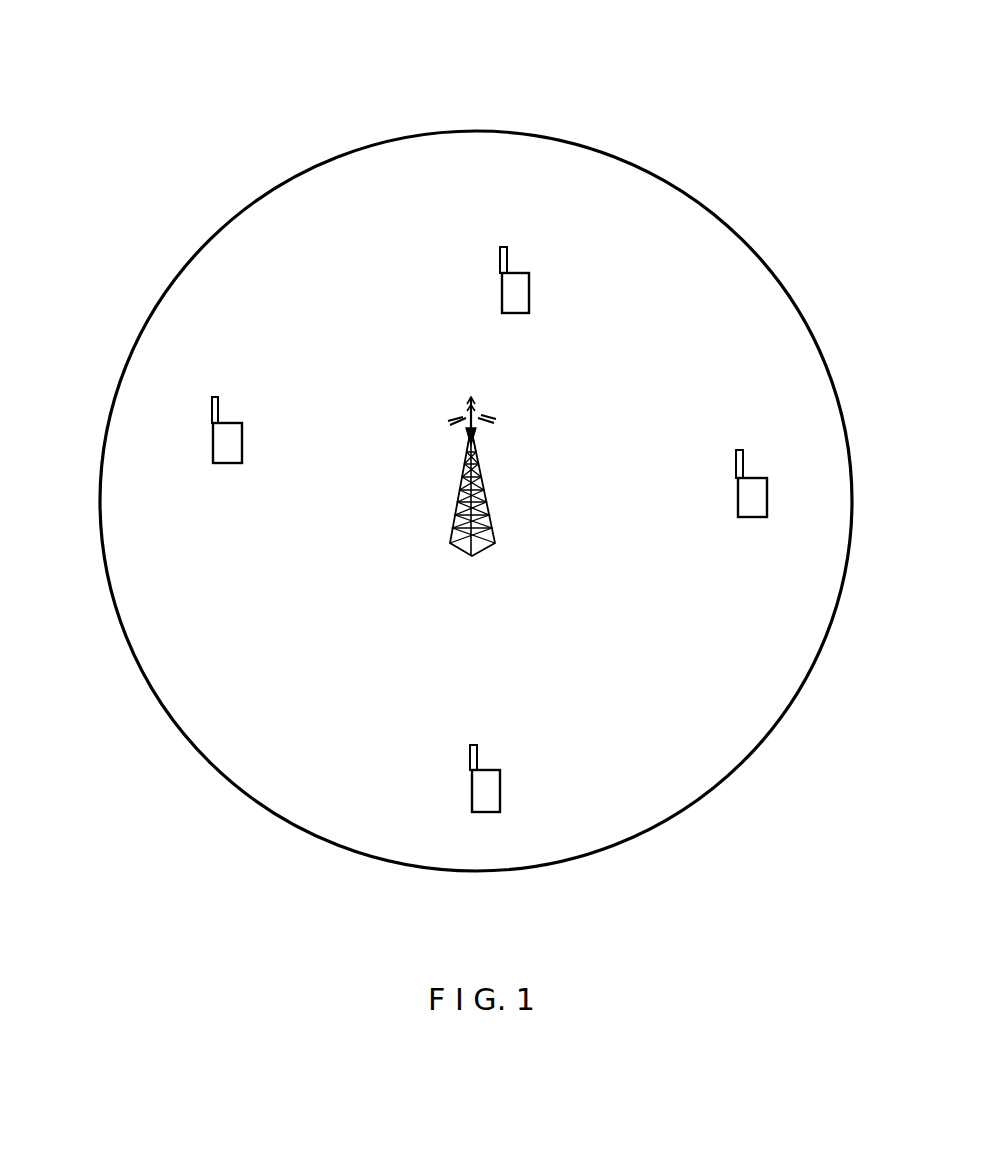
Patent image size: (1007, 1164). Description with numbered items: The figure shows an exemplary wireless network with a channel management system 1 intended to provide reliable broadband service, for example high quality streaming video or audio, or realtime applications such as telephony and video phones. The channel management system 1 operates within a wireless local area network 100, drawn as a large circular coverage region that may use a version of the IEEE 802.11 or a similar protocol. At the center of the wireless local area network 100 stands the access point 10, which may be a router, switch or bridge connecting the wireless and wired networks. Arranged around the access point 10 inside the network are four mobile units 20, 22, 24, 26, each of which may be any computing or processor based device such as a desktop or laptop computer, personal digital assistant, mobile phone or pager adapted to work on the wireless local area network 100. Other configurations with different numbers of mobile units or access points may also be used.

The channel management system 1 is at (443, 46).
The wireless local area network 100 is at (413, 251).
The access point 10 is at (490, 548).
The mobile unit 20 is at (529, 290).
The mobile unit 22 is at (767, 487).
The mobile unit 24 is at (472, 788).
The mobile unit 26 is at (213, 447).